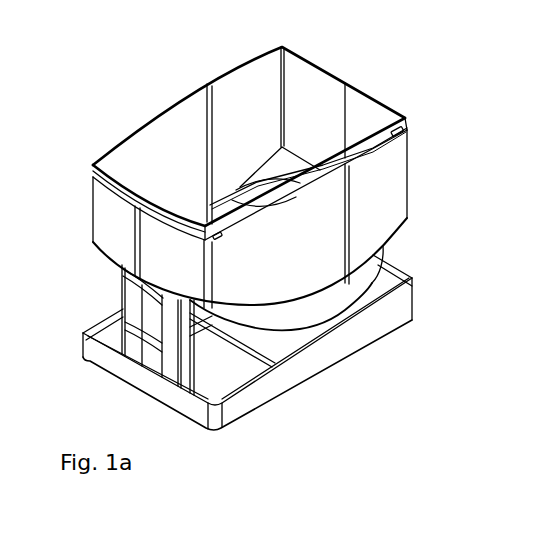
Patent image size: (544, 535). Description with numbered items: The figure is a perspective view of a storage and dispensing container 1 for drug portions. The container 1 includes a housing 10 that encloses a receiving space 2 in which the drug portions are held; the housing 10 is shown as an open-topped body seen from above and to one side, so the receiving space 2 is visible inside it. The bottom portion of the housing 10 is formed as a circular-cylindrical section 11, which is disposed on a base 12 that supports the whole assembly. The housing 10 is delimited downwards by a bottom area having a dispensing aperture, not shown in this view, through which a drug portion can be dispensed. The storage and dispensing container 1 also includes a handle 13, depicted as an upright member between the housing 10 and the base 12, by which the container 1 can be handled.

The storage and dispensing container 1 is at (404, 70).
The receiving space 2 is at (163, 156).
The housing 10 is at (385, 192).
The circular-cylindrical section 11 is at (348, 297).
The base 12 is at (348, 337).
The handle 13 is at (160, 355).